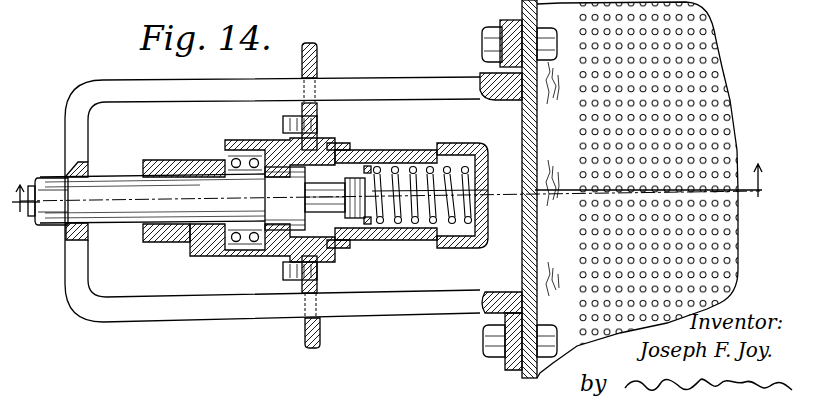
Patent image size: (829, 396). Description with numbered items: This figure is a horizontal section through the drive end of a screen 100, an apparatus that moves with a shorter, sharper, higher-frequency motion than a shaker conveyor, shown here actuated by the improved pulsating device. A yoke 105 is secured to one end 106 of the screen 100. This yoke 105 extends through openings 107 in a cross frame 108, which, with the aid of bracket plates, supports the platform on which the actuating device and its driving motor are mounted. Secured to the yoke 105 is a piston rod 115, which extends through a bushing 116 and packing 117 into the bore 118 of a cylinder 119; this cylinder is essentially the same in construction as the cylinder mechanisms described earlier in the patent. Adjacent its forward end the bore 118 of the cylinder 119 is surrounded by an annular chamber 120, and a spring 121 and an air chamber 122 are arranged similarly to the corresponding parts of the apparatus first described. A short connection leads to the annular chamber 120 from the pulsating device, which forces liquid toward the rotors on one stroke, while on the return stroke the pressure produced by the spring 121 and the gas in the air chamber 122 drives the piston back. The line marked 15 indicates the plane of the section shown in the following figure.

The section line 15- 15 is at (392, 176).
The screen 100 is at (707, 55).
The yoke 105 is at (182, 317).
The end 106 is at (520, 13).
The openings 107 is at (317, 78).
The cross frame 108 is at (318, 343).
The piston rod 115 is at (110, 180).
The bushing 116 is at (175, 240).
The packing 117 is at (215, 160).
The bore 118 is at (396, 233).
The cylinder 119 is at (385, 157).
The annular chamber 120 is at (250, 247).
The spring 121 is at (415, 167).
The air chamber 122 is at (425, 222).